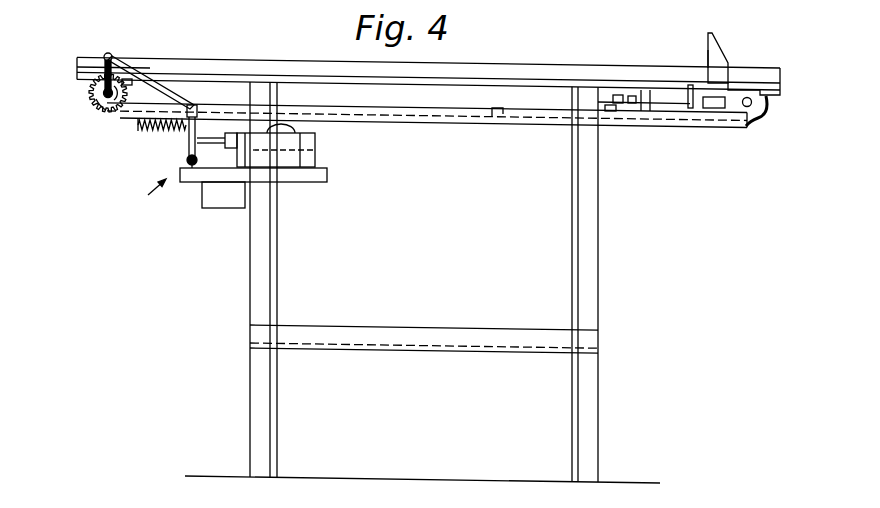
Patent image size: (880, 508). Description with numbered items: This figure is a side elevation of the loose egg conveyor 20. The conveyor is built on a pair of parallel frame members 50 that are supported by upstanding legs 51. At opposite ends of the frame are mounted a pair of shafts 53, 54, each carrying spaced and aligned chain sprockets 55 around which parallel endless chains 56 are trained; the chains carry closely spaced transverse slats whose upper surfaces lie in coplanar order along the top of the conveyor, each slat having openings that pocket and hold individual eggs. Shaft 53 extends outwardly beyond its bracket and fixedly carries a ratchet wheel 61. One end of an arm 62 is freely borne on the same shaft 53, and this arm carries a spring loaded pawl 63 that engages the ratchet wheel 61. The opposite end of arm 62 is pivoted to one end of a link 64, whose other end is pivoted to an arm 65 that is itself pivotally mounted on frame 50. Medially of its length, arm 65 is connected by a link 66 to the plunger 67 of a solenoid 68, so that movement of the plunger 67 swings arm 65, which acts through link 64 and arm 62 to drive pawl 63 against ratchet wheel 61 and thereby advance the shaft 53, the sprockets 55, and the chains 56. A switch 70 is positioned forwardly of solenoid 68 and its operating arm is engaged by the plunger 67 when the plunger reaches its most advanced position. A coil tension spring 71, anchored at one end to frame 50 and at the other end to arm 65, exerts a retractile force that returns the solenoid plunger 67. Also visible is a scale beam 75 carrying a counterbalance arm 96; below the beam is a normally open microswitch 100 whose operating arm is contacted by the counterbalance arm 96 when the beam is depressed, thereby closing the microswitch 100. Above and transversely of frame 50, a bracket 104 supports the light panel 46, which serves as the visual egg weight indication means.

The loose egg conveyor 20 is at (147, 201).
The light panel 46 is at (727, 58).
The frame members 50 is at (465, 88).
The upstanding legs 51 is at (270, 304).
The shaft 53 is at (101, 107).
The shaft 54 is at (758, 120).
The chain sprockets 55 is at (768, 105).
The endless chains 56 is at (500, 114).
The ratchet wheel 61 is at (88, 93).
The arm 62 is at (104, 55).
The spring loaded pawl 63 is at (111, 58).
The link 64 is at (156, 86).
The arm 65 is at (186, 130).
The link 66 is at (217, 140).
The plunger 67 is at (237, 148).
The solenoid 68 is at (291, 164).
The switch 70 is at (312, 158).
The coil tension spring 71 is at (150, 131).
The scale beam 75 is at (675, 103).
The counterbalance arm 96 is at (632, 104).
The microswitch 100 is at (609, 110).
The bracket 104 is at (706, 55).